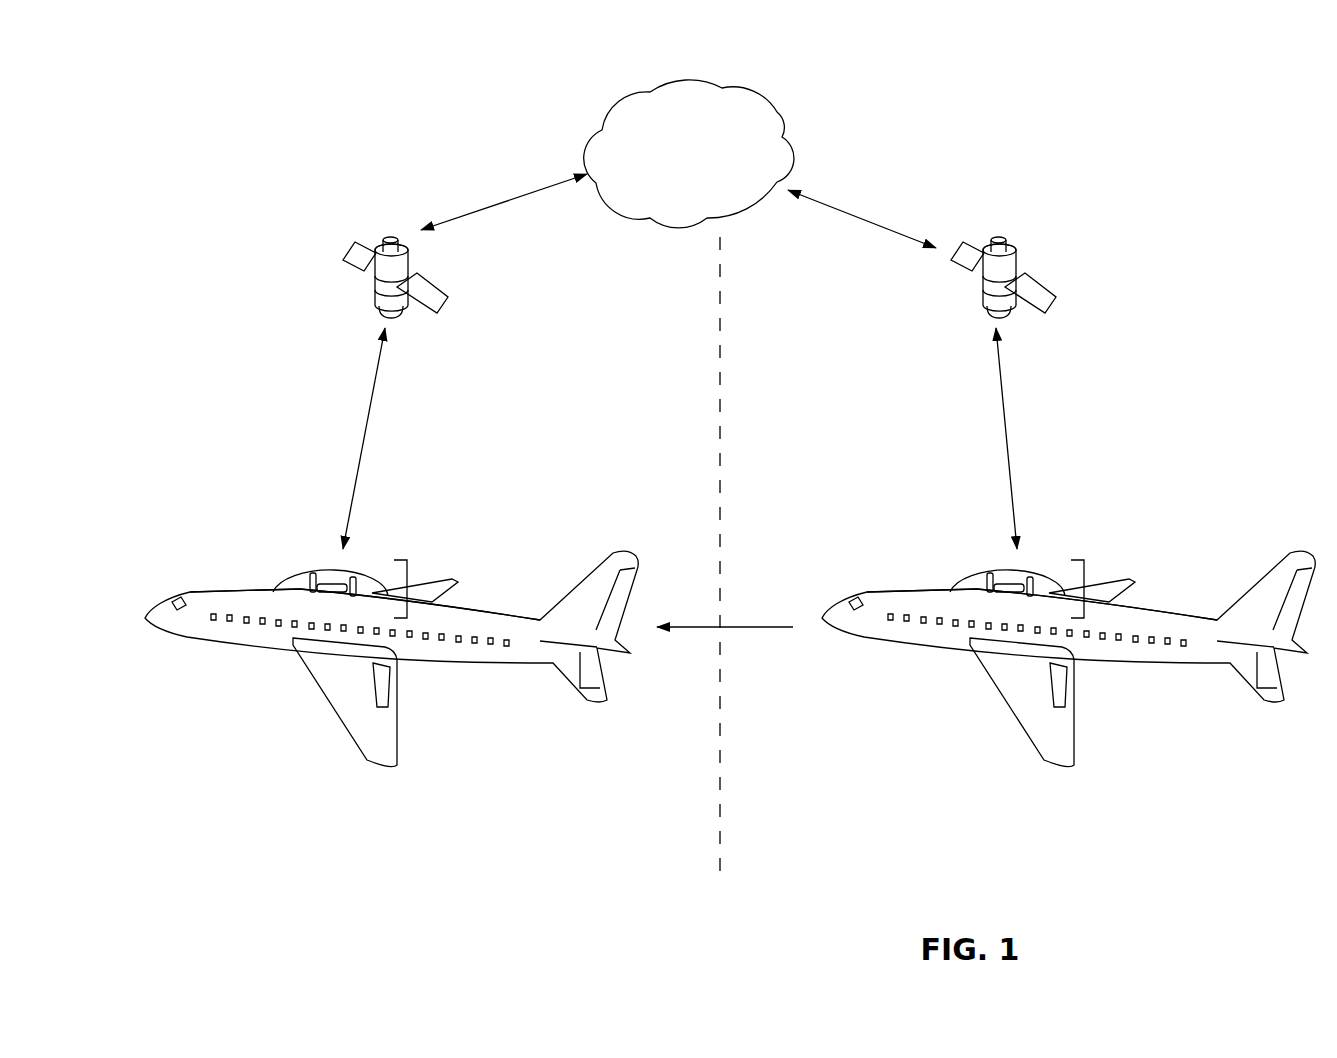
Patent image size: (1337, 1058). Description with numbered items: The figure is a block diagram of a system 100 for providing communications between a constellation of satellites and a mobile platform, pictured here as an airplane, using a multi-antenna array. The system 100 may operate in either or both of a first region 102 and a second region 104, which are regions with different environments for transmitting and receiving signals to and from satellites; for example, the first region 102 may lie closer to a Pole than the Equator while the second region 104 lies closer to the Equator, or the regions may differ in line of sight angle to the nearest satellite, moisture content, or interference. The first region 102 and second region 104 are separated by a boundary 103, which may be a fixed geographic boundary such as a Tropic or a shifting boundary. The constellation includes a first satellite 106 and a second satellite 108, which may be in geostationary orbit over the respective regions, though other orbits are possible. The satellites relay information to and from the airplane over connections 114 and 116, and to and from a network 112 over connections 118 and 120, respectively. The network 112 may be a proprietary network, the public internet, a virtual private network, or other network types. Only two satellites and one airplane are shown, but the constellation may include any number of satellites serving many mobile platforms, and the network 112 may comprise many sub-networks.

The system 100 is at (550, 874).
The first region 102 is at (824, 766).
The boundary 103 is at (721, 838).
The second region 104 is at (632, 765).
The first satellite 106 is at (1000, 240).
The second satellite 108 is at (390, 236).
The network 112 is at (697, 80).
The connection 114 is at (1007, 418).
The connection 116 is at (368, 416).
The connection 118 is at (852, 203).
The connection 120 is at (523, 196).